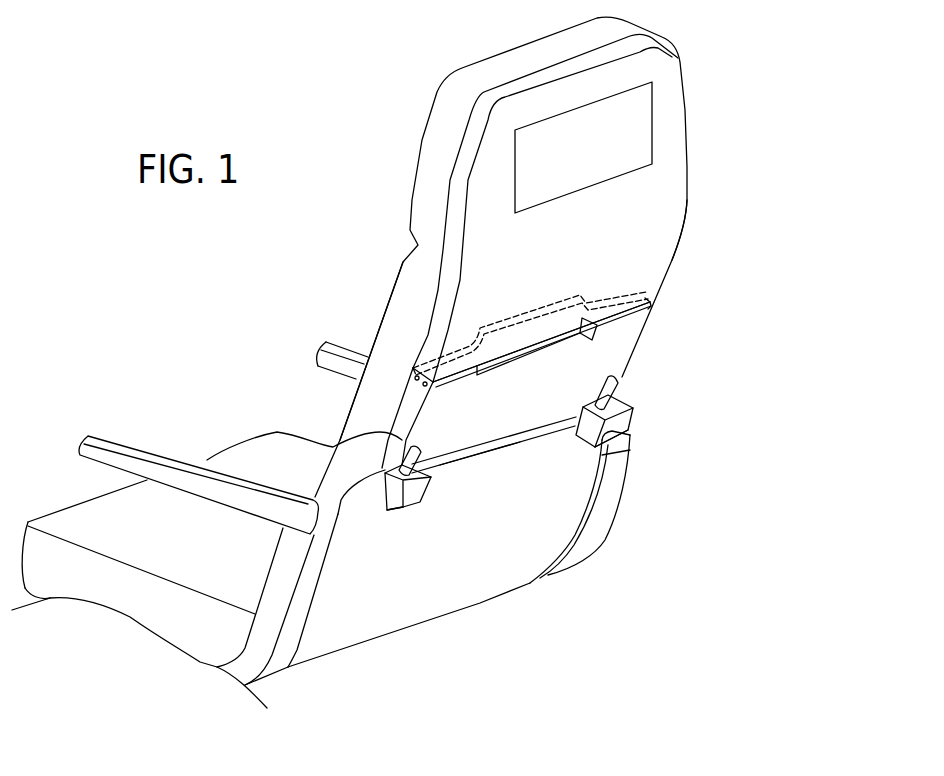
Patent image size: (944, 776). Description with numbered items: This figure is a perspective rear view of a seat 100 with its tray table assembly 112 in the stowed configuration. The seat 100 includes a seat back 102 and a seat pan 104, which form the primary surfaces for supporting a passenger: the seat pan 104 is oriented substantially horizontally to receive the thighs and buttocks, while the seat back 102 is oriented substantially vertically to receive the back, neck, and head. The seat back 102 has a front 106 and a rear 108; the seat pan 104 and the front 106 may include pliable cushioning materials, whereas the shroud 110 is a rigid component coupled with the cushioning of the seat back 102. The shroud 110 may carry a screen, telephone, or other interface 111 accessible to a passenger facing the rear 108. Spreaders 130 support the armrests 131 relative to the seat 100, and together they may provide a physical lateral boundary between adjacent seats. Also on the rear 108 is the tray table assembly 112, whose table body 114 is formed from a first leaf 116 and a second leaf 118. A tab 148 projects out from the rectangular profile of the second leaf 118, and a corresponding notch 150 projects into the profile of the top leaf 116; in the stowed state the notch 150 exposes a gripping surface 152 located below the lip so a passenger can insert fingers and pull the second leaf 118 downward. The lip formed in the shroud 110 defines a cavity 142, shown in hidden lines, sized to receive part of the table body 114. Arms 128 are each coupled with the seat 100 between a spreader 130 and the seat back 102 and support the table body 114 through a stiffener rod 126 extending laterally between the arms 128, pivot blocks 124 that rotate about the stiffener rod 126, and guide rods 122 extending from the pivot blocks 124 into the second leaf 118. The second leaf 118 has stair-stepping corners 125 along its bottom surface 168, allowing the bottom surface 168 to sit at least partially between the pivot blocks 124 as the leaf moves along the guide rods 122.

The seat 100 is at (386, 62).
The seat back 102 is at (424, 142).
The seat pan 104 is at (115, 525).
The front 106 is at (366, 182).
The rear 108 is at (728, 168).
The shroud 110 is at (688, 133).
The interface 111 is at (643, 100).
The tray table assembly 112 is at (678, 320).
The table body 114 is at (386, 418).
The first leaf 116 is at (407, 387).
The second leaf 118 is at (333, 447).
The guide rods 122 is at (633, 408).
The pivot blocks 124 is at (623, 425).
The corners 125 is at (618, 385).
The stiffener rod 126 is at (522, 437).
The arms 128 is at (350, 497).
The spreaders 130 is at (275, 592).
The armrests 131 is at (150, 448).
The cavity 142 is at (550, 318).
The tab 148 is at (551, 335).
The notch 150 is at (605, 331).
The gripping surface 152 is at (518, 374).
The bottom surface 168 is at (473, 446).